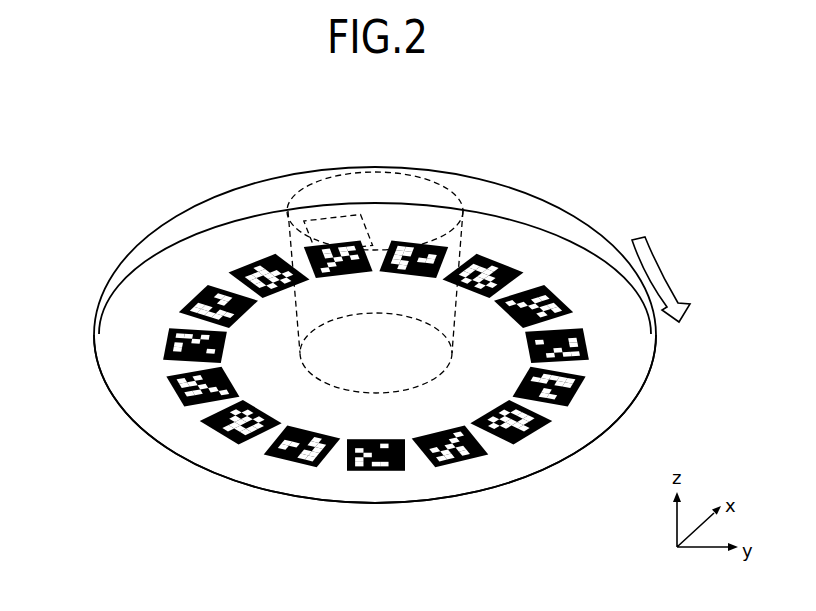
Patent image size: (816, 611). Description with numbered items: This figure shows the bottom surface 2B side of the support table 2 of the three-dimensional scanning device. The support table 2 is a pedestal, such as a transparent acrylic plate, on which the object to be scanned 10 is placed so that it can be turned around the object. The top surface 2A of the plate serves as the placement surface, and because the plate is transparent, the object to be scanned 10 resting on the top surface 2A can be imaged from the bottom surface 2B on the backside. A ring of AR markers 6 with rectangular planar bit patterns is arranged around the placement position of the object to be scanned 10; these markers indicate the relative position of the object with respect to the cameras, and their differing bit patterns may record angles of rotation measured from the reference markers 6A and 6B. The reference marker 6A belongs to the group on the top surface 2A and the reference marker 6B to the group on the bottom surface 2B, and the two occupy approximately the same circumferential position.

The support table 2 is at (104, 278).
The top surface 2A is at (219, 223).
The bottom surface 2B is at (217, 467).
The AR markers 6 is at (538, 434).
The reference marker 6A is at (327, 213).
The reference marker 6B is at (305, 254).
The object to be scanned 10 is at (410, 172).